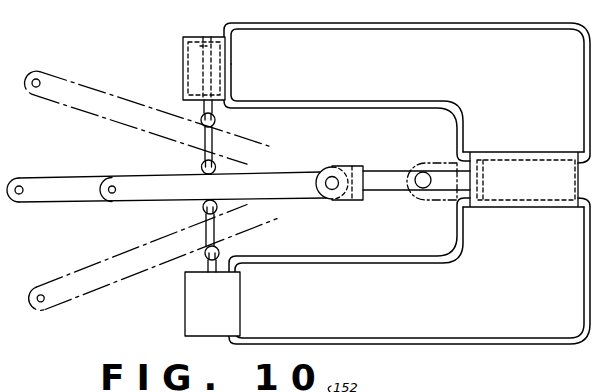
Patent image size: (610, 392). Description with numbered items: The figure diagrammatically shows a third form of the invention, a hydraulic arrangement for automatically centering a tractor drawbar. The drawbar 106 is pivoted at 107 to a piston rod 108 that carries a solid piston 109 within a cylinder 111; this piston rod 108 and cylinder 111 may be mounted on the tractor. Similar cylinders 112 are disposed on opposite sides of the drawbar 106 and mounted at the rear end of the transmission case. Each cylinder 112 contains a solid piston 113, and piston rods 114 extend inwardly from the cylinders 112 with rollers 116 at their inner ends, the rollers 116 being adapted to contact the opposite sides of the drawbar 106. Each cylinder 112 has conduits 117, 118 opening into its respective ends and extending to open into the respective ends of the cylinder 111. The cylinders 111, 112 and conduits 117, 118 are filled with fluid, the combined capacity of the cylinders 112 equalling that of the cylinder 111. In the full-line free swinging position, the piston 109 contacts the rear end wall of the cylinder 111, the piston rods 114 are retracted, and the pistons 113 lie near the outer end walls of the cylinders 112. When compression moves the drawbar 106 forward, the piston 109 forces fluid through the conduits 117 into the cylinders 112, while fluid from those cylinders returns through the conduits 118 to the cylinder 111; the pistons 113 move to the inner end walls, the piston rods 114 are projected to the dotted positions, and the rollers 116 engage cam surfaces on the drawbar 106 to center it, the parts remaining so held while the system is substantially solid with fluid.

The drawbar 106 is at (53, 207).
The pivot 107 is at (332, 183).
The piston rod 108 is at (378, 182).
The solid piston 109 is at (483, 167).
The cylinder 111 is at (548, 206).
The cylinders 112 is at (182, 72).
The solid piston 113 is at (205, 46).
The piston rods 114 is at (211, 72).
The rollers 116 is at (216, 122).
The conduits 117 is at (355, 25).
The conduits 118 is at (342, 102).